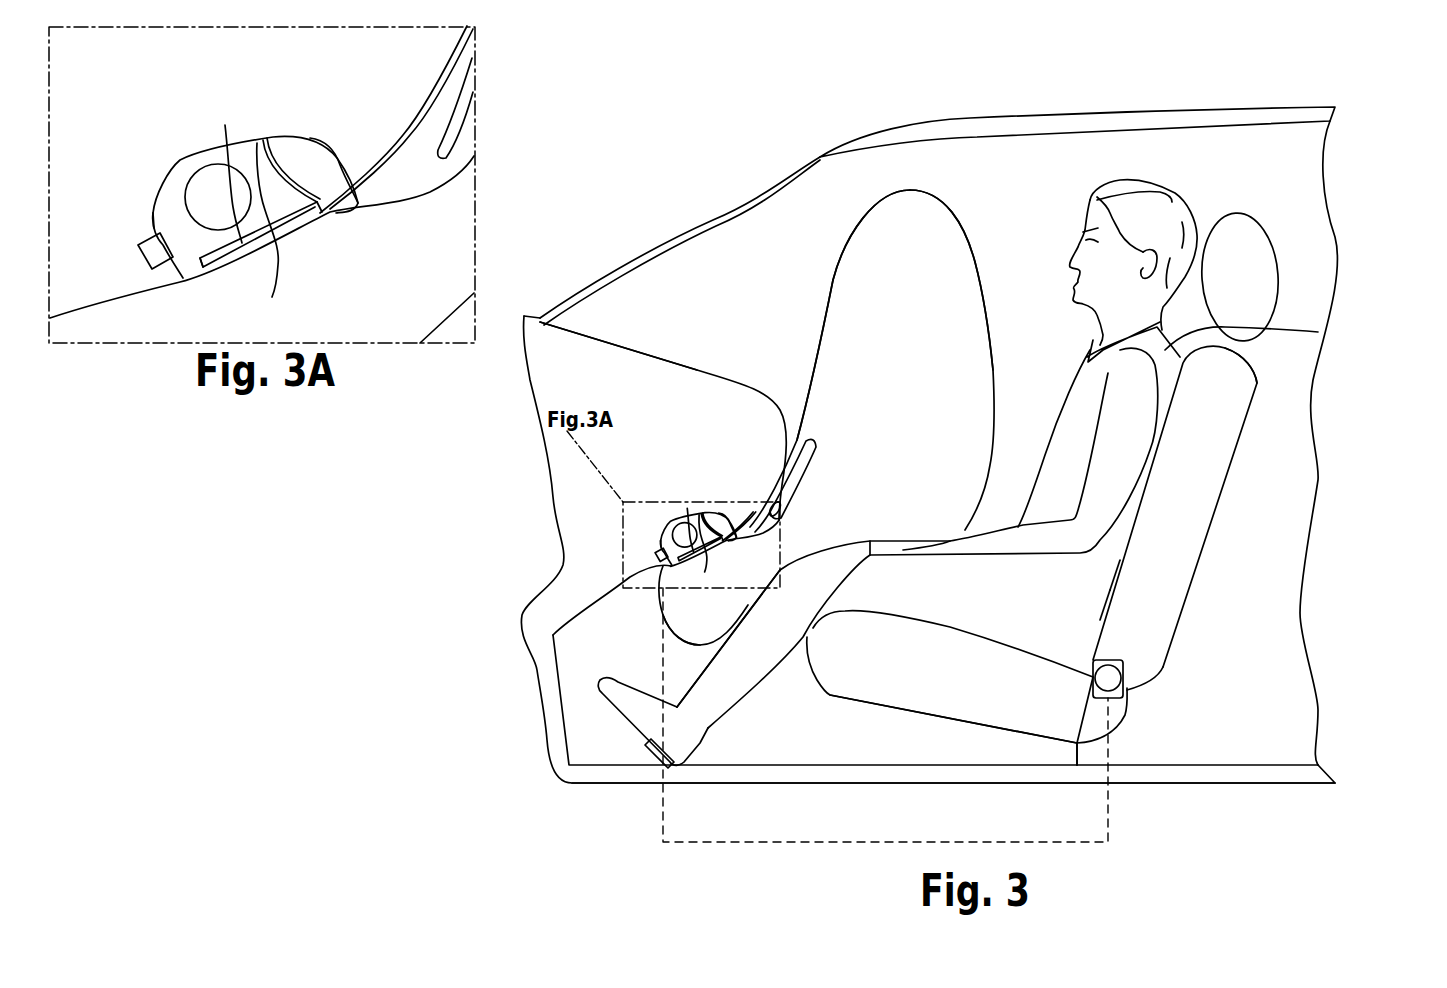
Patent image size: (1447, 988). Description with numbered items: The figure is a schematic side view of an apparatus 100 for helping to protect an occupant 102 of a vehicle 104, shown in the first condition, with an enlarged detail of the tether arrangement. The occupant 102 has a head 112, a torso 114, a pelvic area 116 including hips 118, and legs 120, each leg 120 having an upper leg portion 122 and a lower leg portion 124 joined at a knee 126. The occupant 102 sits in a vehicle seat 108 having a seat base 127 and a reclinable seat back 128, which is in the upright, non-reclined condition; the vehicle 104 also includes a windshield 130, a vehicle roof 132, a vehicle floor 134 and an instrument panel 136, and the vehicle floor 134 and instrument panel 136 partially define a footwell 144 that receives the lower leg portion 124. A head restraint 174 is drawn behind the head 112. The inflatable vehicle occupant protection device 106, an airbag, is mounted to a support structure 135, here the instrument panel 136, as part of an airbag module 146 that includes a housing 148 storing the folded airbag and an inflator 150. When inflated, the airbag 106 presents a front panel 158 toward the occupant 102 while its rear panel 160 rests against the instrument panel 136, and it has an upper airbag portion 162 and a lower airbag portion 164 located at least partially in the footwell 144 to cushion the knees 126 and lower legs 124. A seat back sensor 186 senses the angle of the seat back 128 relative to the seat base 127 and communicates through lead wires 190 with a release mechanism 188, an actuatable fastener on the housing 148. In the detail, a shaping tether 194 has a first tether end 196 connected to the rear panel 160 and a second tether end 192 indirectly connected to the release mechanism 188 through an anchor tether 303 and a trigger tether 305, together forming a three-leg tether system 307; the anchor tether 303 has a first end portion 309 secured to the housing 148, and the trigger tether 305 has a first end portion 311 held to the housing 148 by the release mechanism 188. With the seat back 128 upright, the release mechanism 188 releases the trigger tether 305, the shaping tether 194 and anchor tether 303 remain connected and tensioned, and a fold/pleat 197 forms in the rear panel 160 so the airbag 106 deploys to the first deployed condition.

In FIG. 3, the apparatus 100 is at (1365, 125).
In FIG. 3, the occupant 102 is at (1260, 330).
In FIG. 3, the vehicle 104 is at (1305, 115).
In FIG. 3, the inflatable vehicle occupant protection device 106 is at (935, 220).
In FIG. 3, the vehicle seat 108 is at (1067, 720).
In FIG. 3, the head 112 is at (1160, 210).
In FIG. 3, the torso 114 is at (1130, 433).
In FIG. 3, the pelvic area 116 is at (1087, 587).
In FIG. 3, the hips 118 is at (1087, 633).
In FIG. 3, the legs 120 is at (947, 610).
In FIG. 3, the upper leg portion 122 is at (883, 600).
In FIG. 3, the lower leg portion 124 is at (760, 663).
In FIG. 3, the knee 126 is at (833, 593).
In FIG. 3, the seat base 127 is at (982, 697).
In FIG. 3, the seat back 128 is at (1247, 373).
In FIG. 3, the windshield 130 is at (628, 261).
In FIG. 3, the vehicle roof 132 is at (1248, 113).
In FIG. 3, the vehicle floor 134 is at (1305, 786).
In FIG. 3, the support structure 135 is at (543, 367).
In FIG. 3, the instrument panel 136 is at (618, 346).
In FIG. 3, the footwell 144 is at (583, 708).
In FIG. 3A, the airbag module 146 is at (140, 212).
In FIG. 3, the airbag module 146 is at (650, 530).
In FIG. 3A, the housing 148 is at (225, 125).
In FIG. 3, the housing 148 is at (680, 512).
In FIG. 3A, the inflator 150 is at (200, 202).
In FIG. 3, the inflator 150 is at (683, 533).
In FIG. 3, the front panel 158 is at (1000, 295).
In FIG. 3, the rear panel 160 is at (822, 285).
In FIG. 3, the upper airbag portion 162 is at (962, 250).
In FIG. 3, the lower airbag portion 164 is at (687, 630).
In FIG. 3, the headrest 174 is at (1253, 260).
In FIG. 3, the seat back sensor 186 is at (1130, 690).
In FIG. 3A, the release mechanism 188 is at (138, 248).
In FIG. 3, the release mechanism 188 is at (657, 557).
In FIG. 3, the lead wires 190 is at (1110, 806).
In FIG. 3A, the second tether end 192 is at (360, 198).
In FIG. 3, the second tether end 192 is at (730, 517).
In FIG. 3A, the shaping tether 194 is at (420, 135).
In FIG. 3, the shaping tether 194 is at (762, 505).
In FIG. 3A, the first tether end 196 is at (440, 90).
In FIG. 3, the first tether end 196 is at (782, 490).
In FIG. 3, the fold/pleat 197 is at (800, 447).
In FIG. 3A, the anchor tether 303 is at (287, 172).
In FIG. 3, the anchor tether 303 is at (703, 510).
In FIG. 3A, the trigger tether 305 is at (215, 183).
In FIG. 3, the trigger tether 305 is at (672, 528).
In FIG. 3A, the three-leg tether system 307 is at (315, 208).
In FIG. 3, the three-leg tether system 307 is at (780, 540).
In FIG. 3A, the first end portion 309 is at (270, 292).
In FIG. 3, the first end portion 309 is at (717, 540).
In FIG. 3A, the first end portion 311 is at (203, 266).
In FIG. 3, the first end portion 311 is at (662, 622).